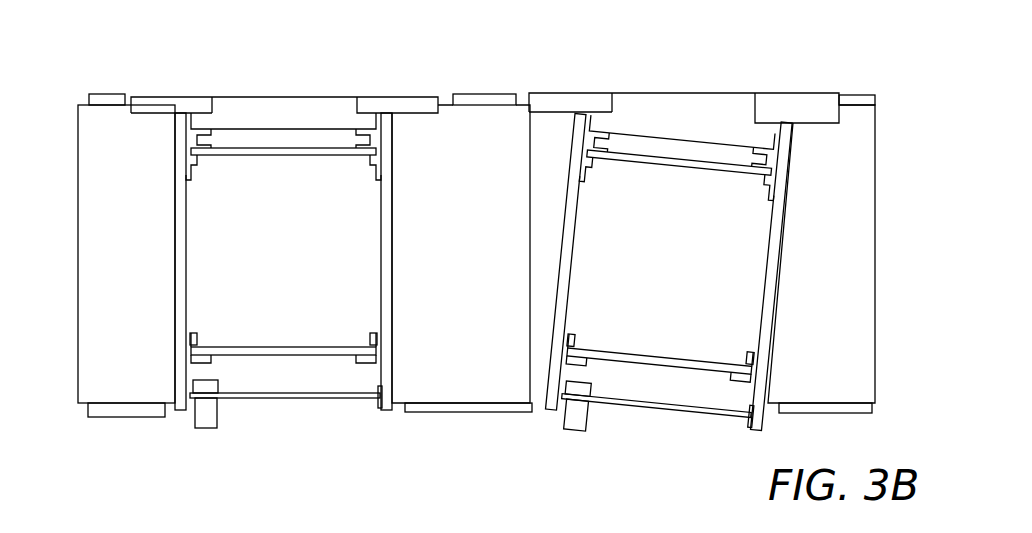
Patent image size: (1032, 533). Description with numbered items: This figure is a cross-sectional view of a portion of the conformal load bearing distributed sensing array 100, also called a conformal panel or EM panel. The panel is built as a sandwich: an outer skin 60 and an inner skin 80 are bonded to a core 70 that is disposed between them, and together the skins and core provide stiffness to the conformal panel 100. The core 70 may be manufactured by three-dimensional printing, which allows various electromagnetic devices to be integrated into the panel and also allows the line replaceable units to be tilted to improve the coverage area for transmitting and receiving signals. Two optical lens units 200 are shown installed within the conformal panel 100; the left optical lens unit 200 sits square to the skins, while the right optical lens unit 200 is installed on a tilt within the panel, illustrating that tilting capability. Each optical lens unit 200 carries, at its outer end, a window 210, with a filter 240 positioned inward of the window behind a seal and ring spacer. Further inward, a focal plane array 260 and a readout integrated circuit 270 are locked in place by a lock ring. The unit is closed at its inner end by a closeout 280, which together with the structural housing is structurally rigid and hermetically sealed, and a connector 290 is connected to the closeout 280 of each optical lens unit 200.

The conformal load bearing distributed sensing array 100 is at (147, 72).
The outer skin 60 is at (493, 94).
The core 70 is at (460, 380).
The inner skin 80 is at (507, 412).
The optical lens unit 200 is at (503, 242).
The window 210 is at (258, 108).
The filter 240 is at (298, 155).
The focal plane array 260 is at (277, 350).
The readout integrated circuit 270 is at (250, 360).
The closeout 280 is at (327, 395).
The connector 290 is at (207, 416).